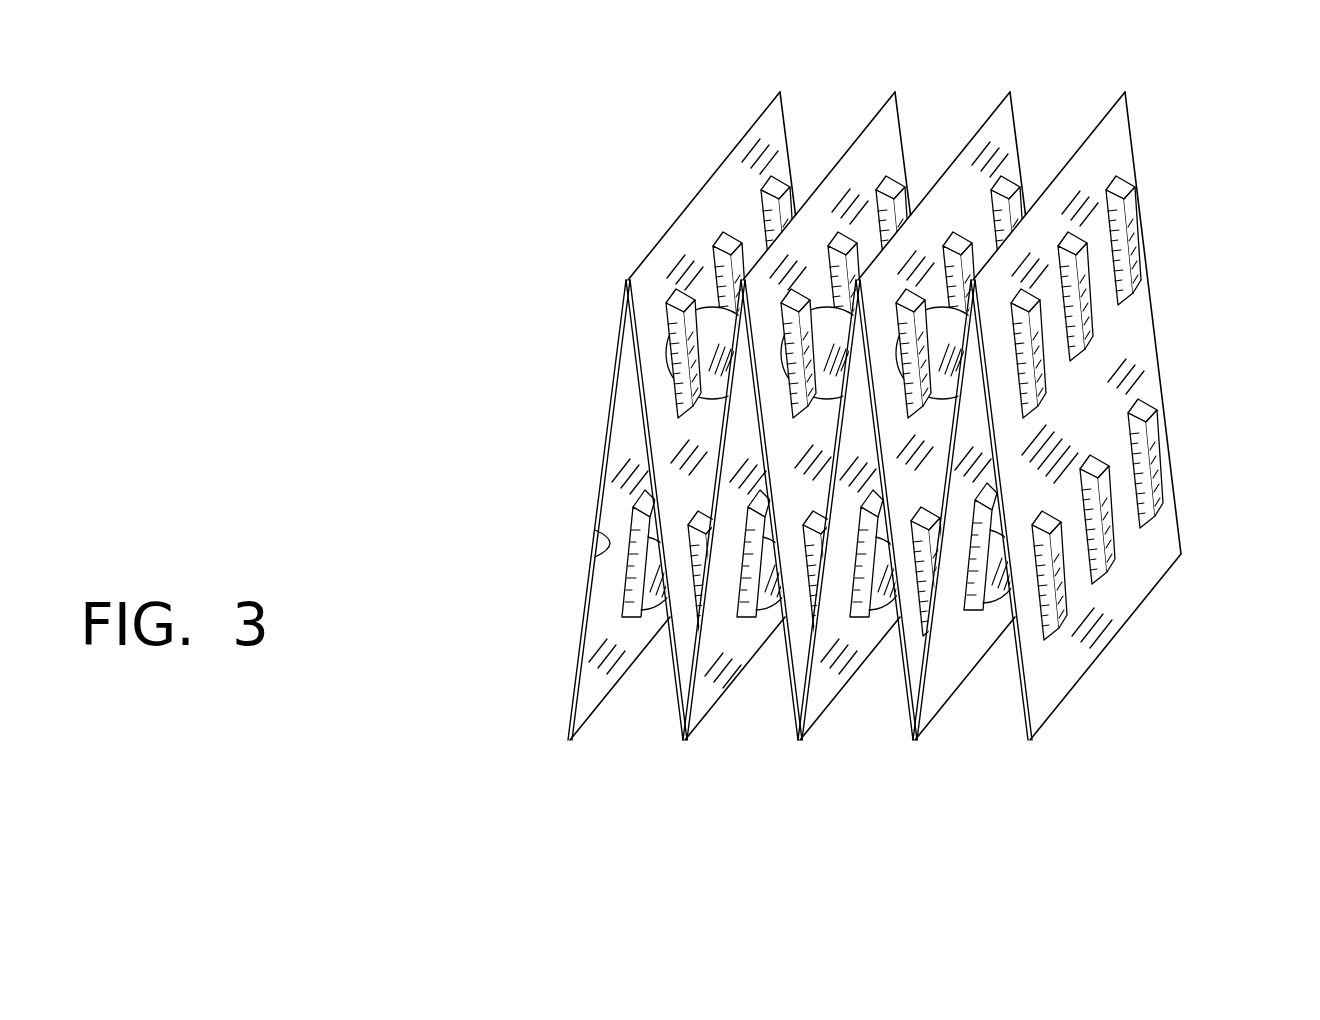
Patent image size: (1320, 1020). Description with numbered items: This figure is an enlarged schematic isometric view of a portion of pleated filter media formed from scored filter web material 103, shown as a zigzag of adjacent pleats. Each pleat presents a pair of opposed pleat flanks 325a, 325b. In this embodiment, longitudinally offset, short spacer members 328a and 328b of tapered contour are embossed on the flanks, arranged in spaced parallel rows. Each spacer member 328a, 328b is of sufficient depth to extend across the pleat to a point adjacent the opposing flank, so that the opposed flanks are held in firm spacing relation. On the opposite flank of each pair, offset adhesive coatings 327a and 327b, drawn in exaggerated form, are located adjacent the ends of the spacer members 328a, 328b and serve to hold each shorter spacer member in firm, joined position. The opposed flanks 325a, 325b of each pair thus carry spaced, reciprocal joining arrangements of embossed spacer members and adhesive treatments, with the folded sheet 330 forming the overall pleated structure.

The scored filter web material 103 is at (412, 228).
The folded sheet 330 is at (686, 208).
The pleat flank 325a is at (615, 537).
The pleat flank 325b is at (1157, 520).
The adhesive coating 327a is at (826, 337).
The adhesive coating 327b is at (643, 621).
The spacer member 328a is at (745, 607).
The spacer member 328b is at (1137, 218).